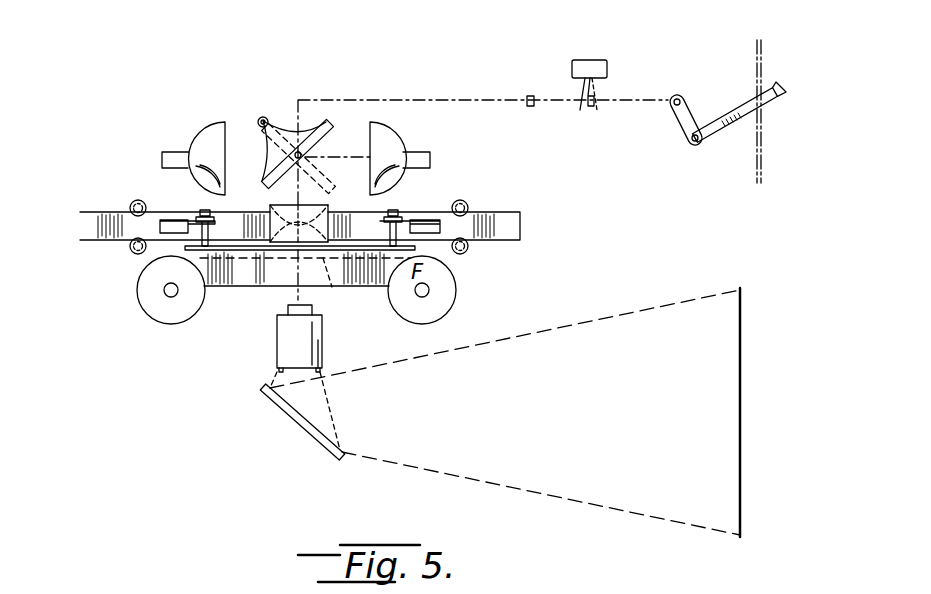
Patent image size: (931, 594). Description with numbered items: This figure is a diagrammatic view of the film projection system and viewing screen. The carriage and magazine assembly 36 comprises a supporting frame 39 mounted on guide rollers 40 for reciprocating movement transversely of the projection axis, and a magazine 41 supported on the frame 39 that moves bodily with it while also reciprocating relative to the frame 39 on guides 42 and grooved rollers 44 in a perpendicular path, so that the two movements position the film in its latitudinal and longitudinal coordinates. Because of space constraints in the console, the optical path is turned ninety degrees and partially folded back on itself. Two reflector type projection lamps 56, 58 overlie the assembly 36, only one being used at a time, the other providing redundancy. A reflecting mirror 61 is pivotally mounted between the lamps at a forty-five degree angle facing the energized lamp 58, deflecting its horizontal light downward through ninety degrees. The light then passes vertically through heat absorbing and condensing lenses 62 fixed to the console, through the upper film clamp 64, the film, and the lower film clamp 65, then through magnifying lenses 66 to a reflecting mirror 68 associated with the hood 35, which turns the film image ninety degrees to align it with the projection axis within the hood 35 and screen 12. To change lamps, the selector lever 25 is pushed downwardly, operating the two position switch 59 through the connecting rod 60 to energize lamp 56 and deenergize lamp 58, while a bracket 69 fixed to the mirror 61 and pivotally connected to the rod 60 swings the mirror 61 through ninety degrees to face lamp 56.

The screen 12 is at (742, 385).
The selector lever 25 is at (787, 88).
The hood 35 is at (638, 302).
The carriage and magazine assembly 36 is at (247, 309).
The supporting frame 39 is at (80, 228).
The guide rollers 40 is at (130, 205).
The magazine 41 is at (129, 290).
The guides 42 is at (162, 218).
The grooved rollers 44 is at (200, 212).
The projection lamp 56 is at (208, 135).
The projection lamp 58 is at (400, 142).
The two position switch 59 is at (578, 60).
The connecting rod 60 is at (437, 100).
The reflecting mirror 61 is at (325, 140).
The heat absorbing and condensing lenses 62 is at (296, 243).
The upper film clamp 64 is at (278, 211).
The lower film clamp 65 is at (339, 287).
The magnifying lenses 66 is at (322, 333).
The reflecting mirror 68 is at (313, 423).
The bracket 69 is at (300, 128).